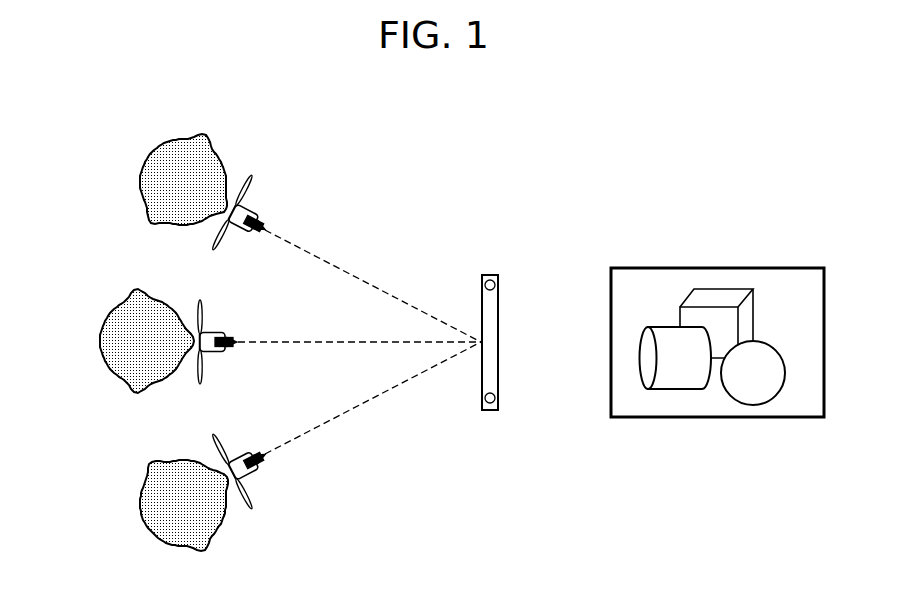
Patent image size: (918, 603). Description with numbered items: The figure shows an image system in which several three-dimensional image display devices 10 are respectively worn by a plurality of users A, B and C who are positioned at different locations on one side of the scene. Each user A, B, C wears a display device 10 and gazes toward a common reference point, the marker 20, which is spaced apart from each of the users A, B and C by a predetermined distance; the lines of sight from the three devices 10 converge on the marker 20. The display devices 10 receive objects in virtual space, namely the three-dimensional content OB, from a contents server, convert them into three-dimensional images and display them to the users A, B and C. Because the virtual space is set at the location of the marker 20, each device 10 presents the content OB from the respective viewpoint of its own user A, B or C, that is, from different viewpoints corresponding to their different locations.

The 3D image display device 10 is at (271, 190).
The marker 20 is at (498, 303).
The user A is at (138, 174).
The user B is at (98, 341).
The user C is at (140, 518).
The 3D content OB is at (746, 240).